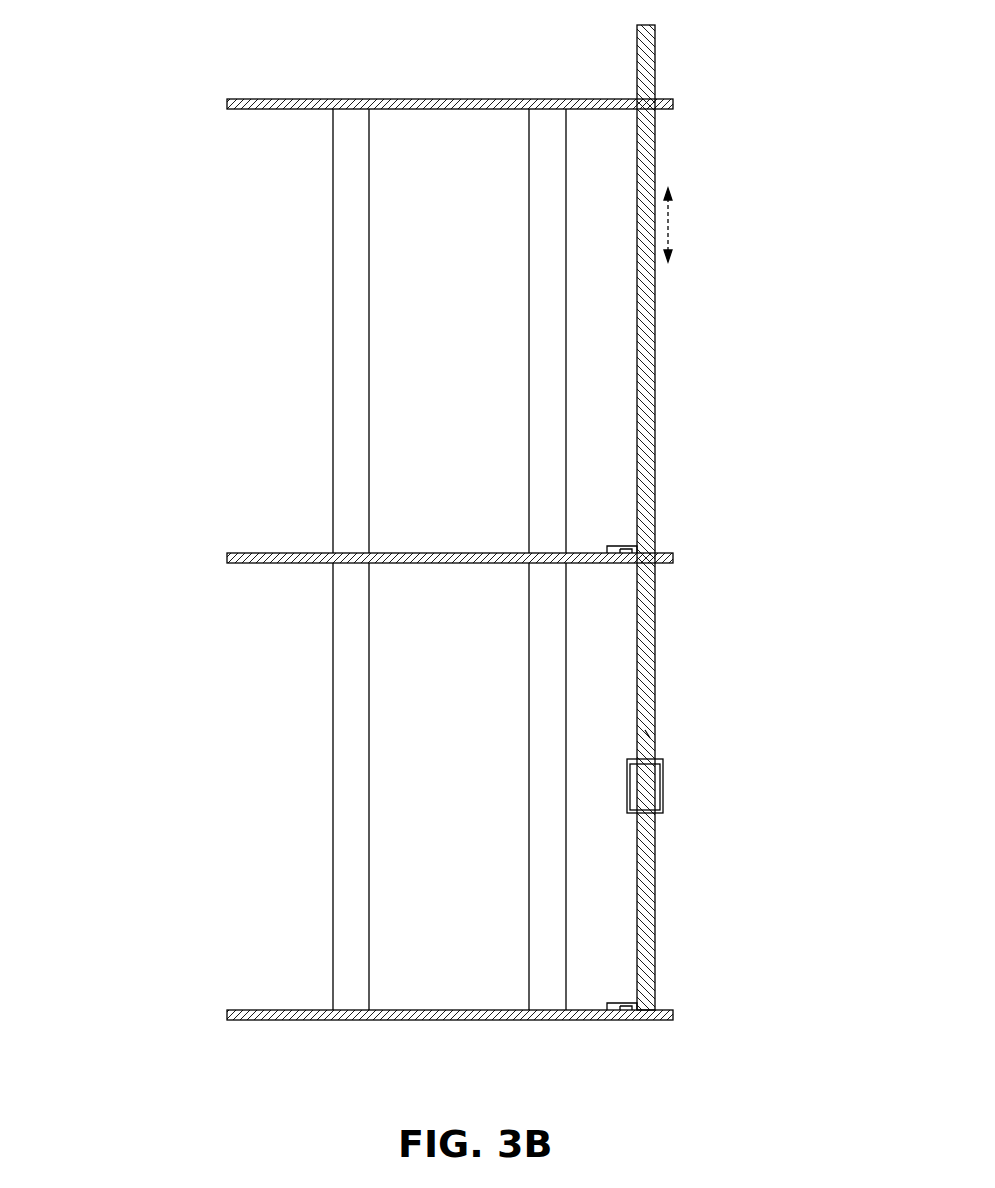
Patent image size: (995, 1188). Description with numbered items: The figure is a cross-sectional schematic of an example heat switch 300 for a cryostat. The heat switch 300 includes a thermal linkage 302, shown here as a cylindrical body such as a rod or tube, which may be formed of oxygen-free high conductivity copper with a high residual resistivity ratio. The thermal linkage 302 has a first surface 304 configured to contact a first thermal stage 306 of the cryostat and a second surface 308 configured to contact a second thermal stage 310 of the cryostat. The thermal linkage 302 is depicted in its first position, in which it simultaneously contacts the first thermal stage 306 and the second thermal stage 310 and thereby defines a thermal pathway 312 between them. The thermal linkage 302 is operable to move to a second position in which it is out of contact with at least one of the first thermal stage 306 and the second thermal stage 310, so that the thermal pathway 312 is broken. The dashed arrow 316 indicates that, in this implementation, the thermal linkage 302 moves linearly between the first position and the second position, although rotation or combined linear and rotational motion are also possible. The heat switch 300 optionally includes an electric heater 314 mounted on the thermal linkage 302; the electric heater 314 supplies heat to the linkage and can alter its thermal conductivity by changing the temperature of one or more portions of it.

The heat switch 300 is at (150, 70).
The thermal linkage 302 is at (657, 45).
The first surface 304 is at (601, 553).
The first thermal stage 306 is at (228, 558).
The second surface 308 is at (601, 1010).
The second thermal stage 310 is at (228, 1015).
The thermal pathway 312 is at (648, 730).
The electric heater 314 is at (663, 802).
The dashed arrow 316 is at (670, 222).